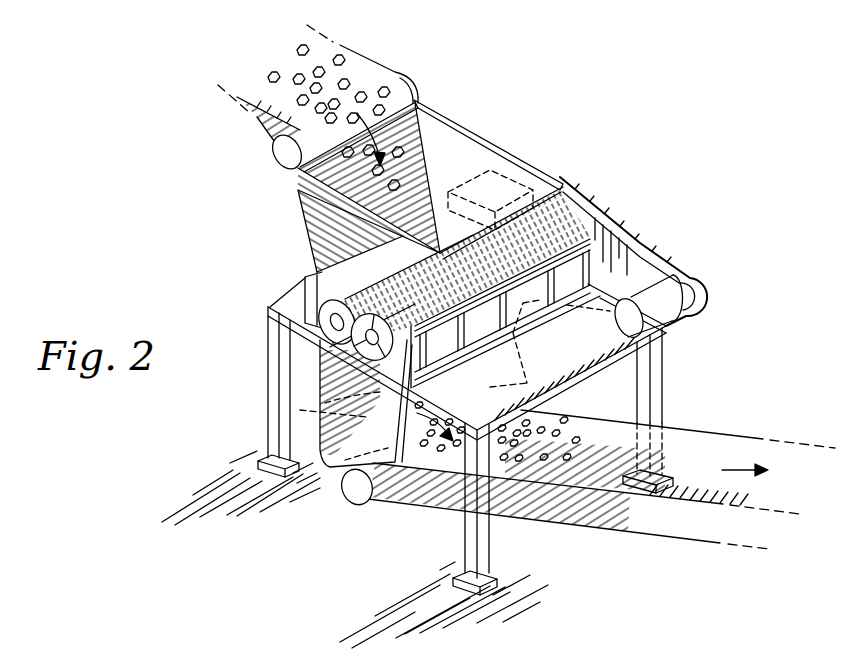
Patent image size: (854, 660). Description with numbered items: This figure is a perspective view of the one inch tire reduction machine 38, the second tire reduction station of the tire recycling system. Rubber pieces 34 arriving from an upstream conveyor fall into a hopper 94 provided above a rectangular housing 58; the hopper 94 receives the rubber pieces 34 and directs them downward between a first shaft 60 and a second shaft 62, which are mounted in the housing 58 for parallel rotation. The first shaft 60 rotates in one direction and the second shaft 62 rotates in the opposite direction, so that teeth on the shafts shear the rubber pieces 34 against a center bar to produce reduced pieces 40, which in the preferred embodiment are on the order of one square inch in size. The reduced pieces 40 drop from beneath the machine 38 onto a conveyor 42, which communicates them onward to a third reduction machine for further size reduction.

The reduced pieces 34 is at (300, 48).
The hopper 94 is at (454, 148).
The one inch tire reduction machine 38 is at (570, 128).
The rectangular housing 58 is at (312, 293).
The first shaft 60 is at (335, 339).
The second shaft 62 is at (300, 410).
The reduced pieces 40 is at (545, 430).
The conveyor 42 is at (698, 438).